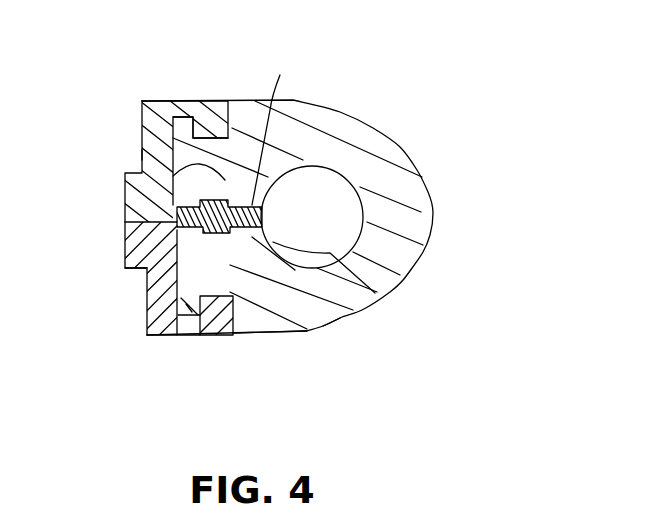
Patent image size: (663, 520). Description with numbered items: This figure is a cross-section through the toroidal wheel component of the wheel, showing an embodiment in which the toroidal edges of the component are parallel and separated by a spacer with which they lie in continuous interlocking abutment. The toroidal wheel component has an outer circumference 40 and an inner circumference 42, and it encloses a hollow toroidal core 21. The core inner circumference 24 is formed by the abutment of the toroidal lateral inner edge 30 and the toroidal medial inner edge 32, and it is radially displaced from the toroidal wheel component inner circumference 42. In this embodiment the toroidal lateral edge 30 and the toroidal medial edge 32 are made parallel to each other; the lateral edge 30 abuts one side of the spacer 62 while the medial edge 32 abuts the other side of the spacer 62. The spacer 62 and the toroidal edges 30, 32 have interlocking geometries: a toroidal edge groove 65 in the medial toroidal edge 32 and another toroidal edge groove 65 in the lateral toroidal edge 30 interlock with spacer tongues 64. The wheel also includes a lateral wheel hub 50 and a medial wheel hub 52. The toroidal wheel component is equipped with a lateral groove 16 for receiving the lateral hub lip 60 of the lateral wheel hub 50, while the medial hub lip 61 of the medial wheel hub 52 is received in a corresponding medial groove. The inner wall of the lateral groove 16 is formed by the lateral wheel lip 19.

The lateral groove 16 is at (270, 359).
The lateral wheel lip 19 is at (178, 337).
The hollow toroidal core 21 is at (332, 218).
The core inner circumference 24 is at (273, 202).
The toroidal lateral inner edge 30 is at (276, 131).
The toroidal medial inner edge 32 is at (145, 270).
The toroidal wheel component outer circumference 40 is at (423, 246).
The toroidal wheel component inner circumference 42 is at (302, 148).
The lateral wheel hub 50 is at (157, 114).
The medial wheel hub 52 is at (147, 337).
The lateral hub lip 60 is at (226, 130).
The medial hub lip 61 is at (208, 335).
The spacer 62 is at (357, 311).
The spacer tongues 64 is at (230, 200).
The toroidal edge groove 65 is at (148, 154).